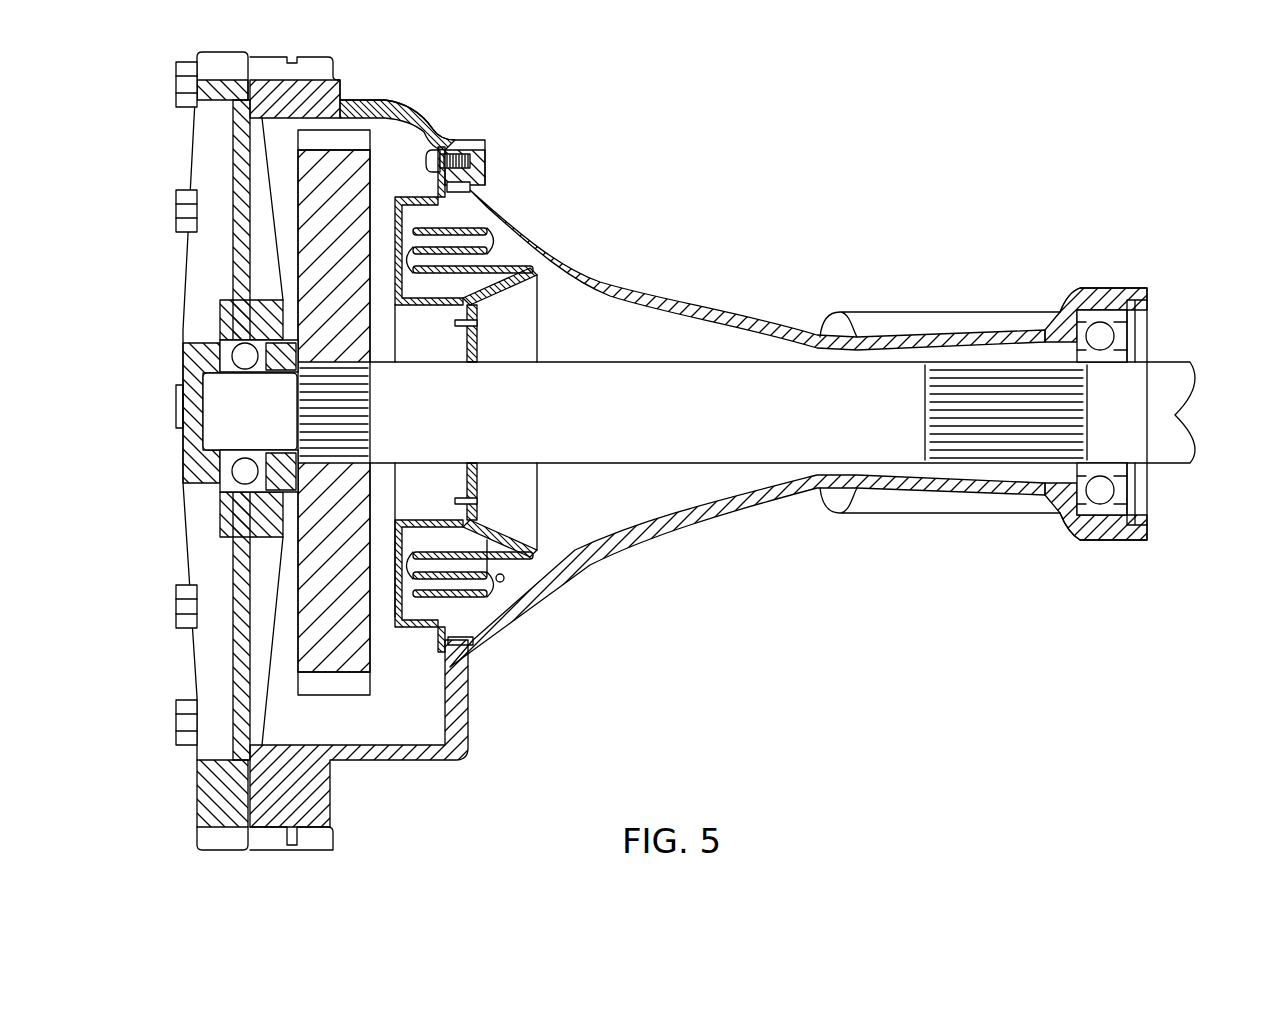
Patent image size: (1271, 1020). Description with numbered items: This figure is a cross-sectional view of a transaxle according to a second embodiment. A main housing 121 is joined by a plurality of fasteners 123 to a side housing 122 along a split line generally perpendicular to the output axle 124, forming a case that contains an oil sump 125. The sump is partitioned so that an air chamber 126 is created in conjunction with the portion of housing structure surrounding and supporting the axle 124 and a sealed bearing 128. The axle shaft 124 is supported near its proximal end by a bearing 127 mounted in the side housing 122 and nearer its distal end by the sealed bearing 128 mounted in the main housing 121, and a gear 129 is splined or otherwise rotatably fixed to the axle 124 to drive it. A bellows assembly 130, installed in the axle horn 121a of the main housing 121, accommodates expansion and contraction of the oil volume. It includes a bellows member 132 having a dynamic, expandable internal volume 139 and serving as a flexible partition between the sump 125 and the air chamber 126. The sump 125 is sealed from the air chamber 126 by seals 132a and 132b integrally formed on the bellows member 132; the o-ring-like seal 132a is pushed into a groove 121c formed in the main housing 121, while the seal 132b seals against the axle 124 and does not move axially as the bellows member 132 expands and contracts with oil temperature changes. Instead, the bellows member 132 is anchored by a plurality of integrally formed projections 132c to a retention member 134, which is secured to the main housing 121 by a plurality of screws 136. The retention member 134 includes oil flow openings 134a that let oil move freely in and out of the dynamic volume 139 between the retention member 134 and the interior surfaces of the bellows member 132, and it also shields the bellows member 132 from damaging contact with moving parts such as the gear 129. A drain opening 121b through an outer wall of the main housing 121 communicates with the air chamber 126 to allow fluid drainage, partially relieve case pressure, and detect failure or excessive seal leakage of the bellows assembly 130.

The main housing 121 is at (262, 107).
The axle horn 121a is at (575, 276).
The drain opening 121b is at (505, 578).
The groove 121c is at (475, 642).
The side housing 122 is at (215, 98).
The fasteners 123 is at (178, 85).
The output axle 124 is at (668, 424).
The oil sump 125 is at (427, 718).
The air chamber 126 is at (626, 506).
The bearing 127 is at (222, 342).
The sealed bearing 128 is at (1100, 335).
The gear 129 is at (340, 685).
The bellows assembly 130 is at (595, 208).
The bellows member 132 is at (490, 525).
The seal 132a is at (458, 189).
The seal 132b is at (480, 358).
The projections 132c is at (478, 323).
The retention member 134 is at (423, 628).
The oil flow openings 134a is at (398, 275).
The screws 136 is at (428, 162).
The dynamic volume 139 is at (482, 292).